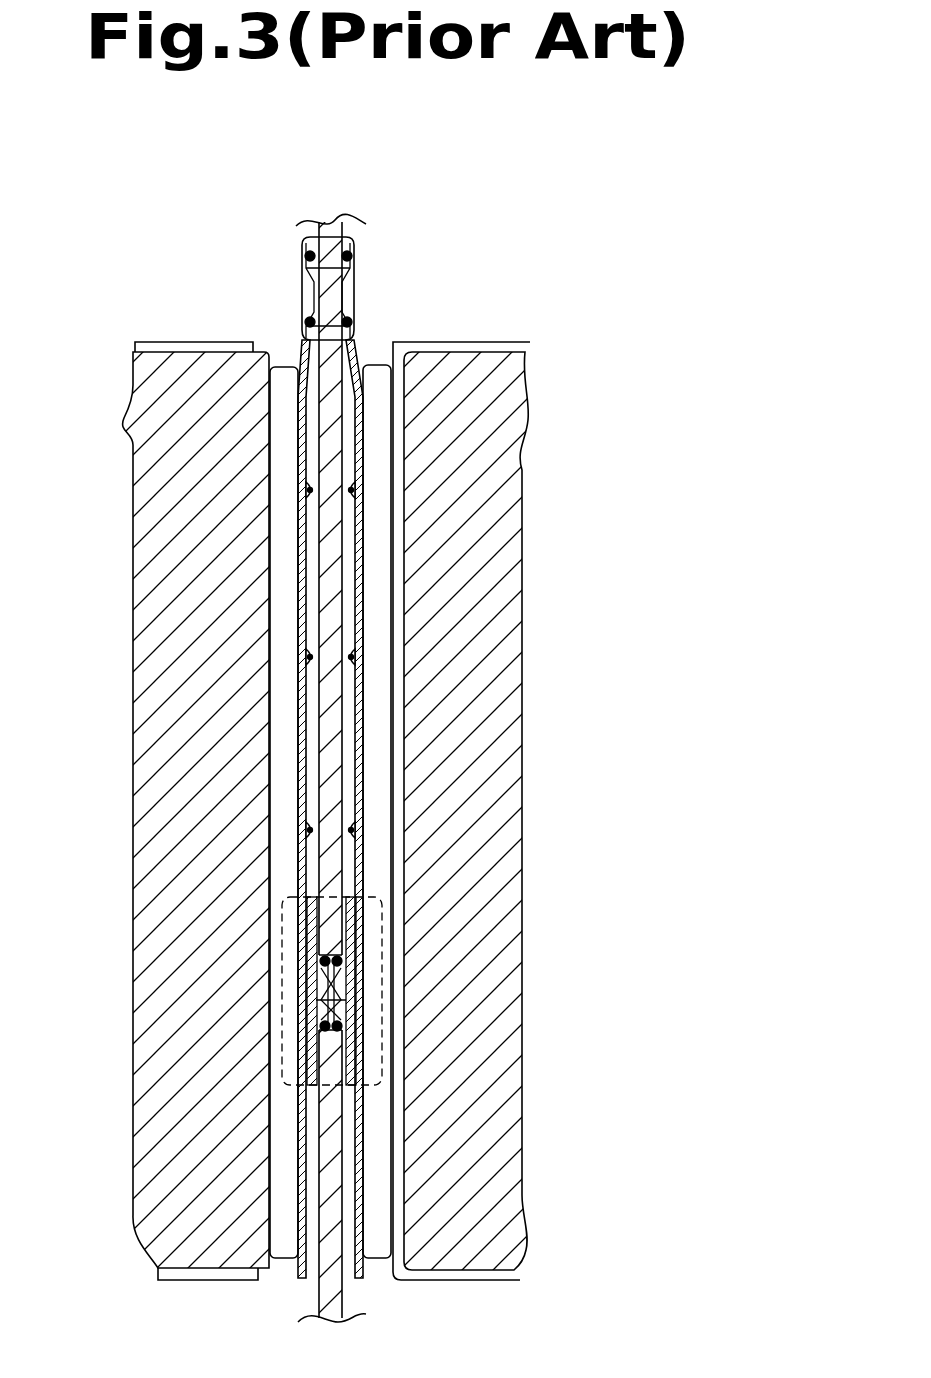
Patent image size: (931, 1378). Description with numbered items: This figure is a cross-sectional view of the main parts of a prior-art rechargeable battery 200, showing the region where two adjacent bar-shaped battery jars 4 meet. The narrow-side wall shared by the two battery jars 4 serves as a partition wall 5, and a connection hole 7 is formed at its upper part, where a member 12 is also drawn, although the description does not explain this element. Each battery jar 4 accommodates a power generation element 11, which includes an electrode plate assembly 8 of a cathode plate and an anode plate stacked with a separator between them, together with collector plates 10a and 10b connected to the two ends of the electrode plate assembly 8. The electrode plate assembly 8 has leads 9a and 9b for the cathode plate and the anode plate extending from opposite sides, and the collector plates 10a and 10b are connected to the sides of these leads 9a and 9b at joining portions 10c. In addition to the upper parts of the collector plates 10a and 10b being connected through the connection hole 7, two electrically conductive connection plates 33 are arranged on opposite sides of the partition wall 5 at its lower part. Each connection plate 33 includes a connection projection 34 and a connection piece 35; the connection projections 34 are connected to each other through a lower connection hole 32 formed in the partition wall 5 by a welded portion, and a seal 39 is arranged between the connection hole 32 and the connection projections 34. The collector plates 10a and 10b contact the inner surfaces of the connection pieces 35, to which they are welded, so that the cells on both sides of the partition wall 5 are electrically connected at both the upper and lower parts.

The rechargeable battery 200 is at (112, 292).
The power generation element 11 is at (192, 325).
The electrode plate assembly 8 is at (152, 744).
The lead 9a is at (372, 585).
The lead 9b is at (283, 562).
The collector plate 10a is at (362, 690).
The collector plate 10b is at (300, 696).
The joining portion 10c is at (302, 657).
The partition wall 5 is at (328, 482).
The connection hole 7 is at (355, 262).
The seal member 12 is at (322, 275).
The connection hole 32 is at (330, 977).
The connection plate 33 is at (312, 1045).
The connection projection 34 is at (330, 997).
The connection piece 35 is at (285, 1075).
The seal 39 is at (345, 960).
The battery jar 4 is at (23, 1000).